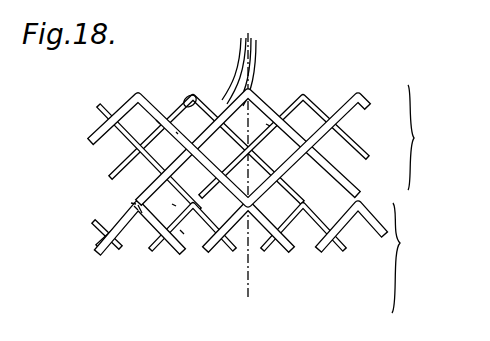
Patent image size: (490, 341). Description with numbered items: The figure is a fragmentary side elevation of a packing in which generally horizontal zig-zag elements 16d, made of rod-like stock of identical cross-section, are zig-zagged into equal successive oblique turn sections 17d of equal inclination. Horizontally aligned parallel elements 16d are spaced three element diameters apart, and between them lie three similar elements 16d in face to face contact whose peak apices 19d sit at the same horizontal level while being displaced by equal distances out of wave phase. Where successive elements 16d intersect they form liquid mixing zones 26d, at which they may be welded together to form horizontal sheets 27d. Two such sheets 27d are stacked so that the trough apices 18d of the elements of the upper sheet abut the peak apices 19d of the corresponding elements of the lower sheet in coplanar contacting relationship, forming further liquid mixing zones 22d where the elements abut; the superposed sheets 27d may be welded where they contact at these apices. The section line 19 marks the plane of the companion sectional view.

The zig-zagged element 16d is at (178, 101).
The oblique turn section 17d is at (240, 44).
The trough apex 18d is at (133, 203).
The peak apex 19d is at (188, 98).
The liquid mixing zone 22d is at (134, 205).
The intersection mixing zone 26d is at (268, 123).
The horizontal sheet 27d is at (421, 199).
The center line / width 19 is at (248, 42).